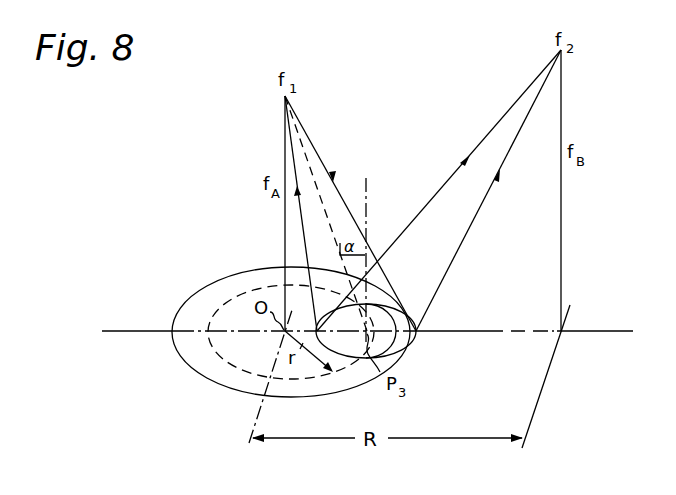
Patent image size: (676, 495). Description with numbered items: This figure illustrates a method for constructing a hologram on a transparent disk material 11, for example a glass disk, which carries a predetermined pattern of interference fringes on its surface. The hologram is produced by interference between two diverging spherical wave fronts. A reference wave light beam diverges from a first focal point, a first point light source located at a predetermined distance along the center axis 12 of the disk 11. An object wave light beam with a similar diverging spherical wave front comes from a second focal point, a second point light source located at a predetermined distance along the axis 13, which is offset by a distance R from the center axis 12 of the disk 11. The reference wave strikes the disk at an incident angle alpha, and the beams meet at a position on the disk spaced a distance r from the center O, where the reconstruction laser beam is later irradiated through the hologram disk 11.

The transparent disk material 11 is at (190, 368).
The center axis 12 is at (283, 229).
The axis 13 is at (563, 212).